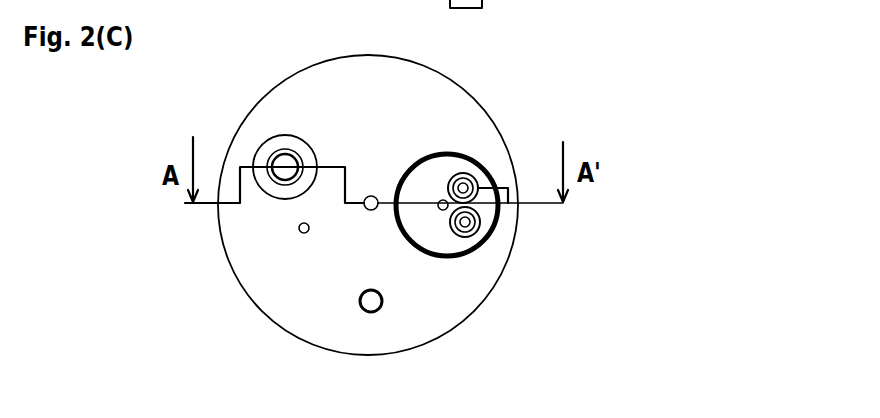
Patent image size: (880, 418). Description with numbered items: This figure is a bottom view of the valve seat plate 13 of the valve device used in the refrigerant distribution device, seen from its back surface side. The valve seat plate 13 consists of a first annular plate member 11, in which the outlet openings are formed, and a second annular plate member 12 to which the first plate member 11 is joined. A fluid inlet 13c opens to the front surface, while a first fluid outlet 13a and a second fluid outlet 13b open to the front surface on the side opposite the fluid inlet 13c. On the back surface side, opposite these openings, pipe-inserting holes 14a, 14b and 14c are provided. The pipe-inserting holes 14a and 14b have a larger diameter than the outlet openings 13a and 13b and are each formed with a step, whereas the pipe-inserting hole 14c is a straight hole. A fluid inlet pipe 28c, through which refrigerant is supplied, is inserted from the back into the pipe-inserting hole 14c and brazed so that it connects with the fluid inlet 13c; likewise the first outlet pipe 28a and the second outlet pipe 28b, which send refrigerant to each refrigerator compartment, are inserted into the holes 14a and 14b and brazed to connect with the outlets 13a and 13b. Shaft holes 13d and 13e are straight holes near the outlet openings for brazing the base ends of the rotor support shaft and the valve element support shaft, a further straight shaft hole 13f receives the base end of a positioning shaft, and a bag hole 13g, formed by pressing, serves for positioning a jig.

The first annular plate member 11 is at (458, 155).
The second annular plate member 12 is at (460, 108).
The valve seat plate 13 is at (545, 44).
The first fluid outlet 13a is at (476, 236).
The second fluid outlet 13b is at (483, 169).
The fluid inlet 13c is at (283, 160).
The shaft hole 13d is at (370, 196).
The shaft hole 13e is at (441, 210).
The shaft hole 13f is at (301, 233).
The bag hole 13g is at (368, 311).
The pipe-inserting hole 14a is at (462, 238).
The pipe-inserting hole 14b is at (449, 182).
The pipe-inserting hole 14c is at (287, 158).
The first outlet pipe 28a is at (478, 200).
The second outlet pipe 28b is at (478, 235).
The fluid inlet pipe 28c is at (268, 160).